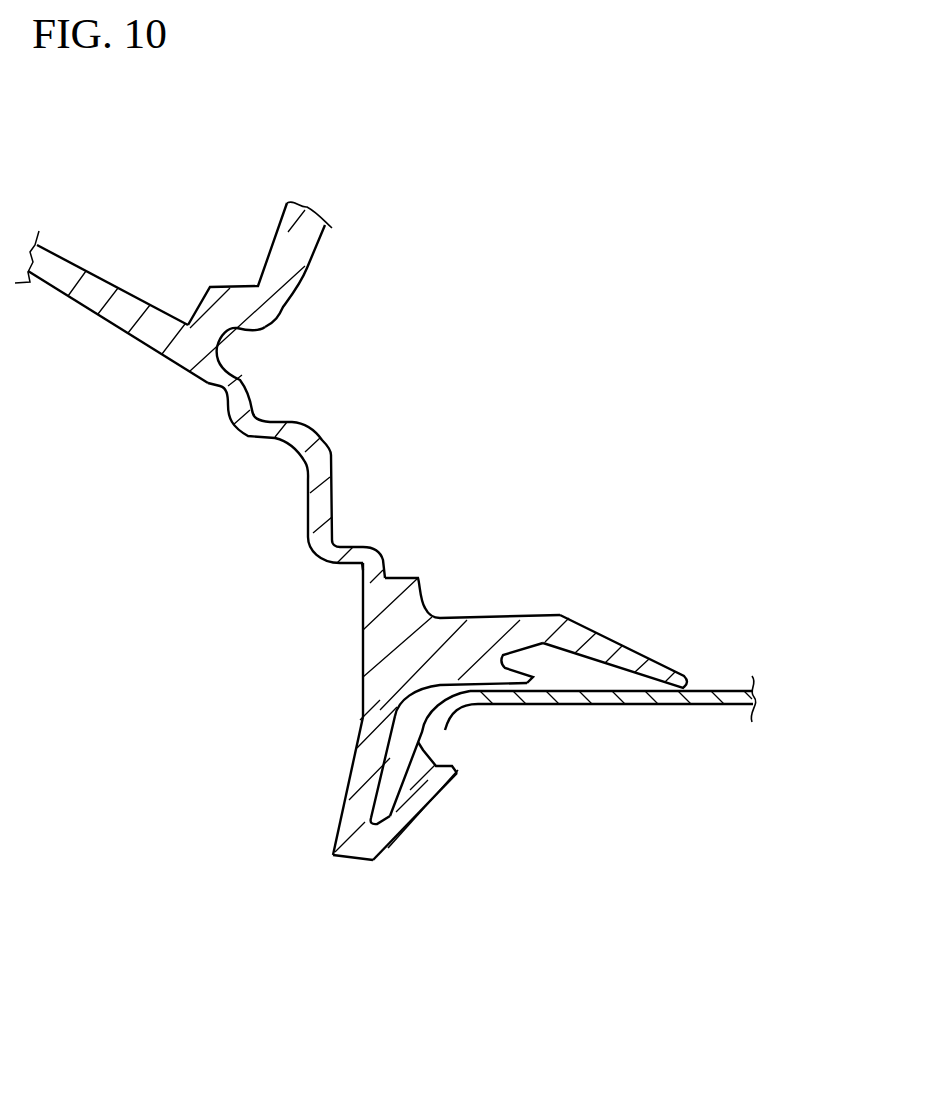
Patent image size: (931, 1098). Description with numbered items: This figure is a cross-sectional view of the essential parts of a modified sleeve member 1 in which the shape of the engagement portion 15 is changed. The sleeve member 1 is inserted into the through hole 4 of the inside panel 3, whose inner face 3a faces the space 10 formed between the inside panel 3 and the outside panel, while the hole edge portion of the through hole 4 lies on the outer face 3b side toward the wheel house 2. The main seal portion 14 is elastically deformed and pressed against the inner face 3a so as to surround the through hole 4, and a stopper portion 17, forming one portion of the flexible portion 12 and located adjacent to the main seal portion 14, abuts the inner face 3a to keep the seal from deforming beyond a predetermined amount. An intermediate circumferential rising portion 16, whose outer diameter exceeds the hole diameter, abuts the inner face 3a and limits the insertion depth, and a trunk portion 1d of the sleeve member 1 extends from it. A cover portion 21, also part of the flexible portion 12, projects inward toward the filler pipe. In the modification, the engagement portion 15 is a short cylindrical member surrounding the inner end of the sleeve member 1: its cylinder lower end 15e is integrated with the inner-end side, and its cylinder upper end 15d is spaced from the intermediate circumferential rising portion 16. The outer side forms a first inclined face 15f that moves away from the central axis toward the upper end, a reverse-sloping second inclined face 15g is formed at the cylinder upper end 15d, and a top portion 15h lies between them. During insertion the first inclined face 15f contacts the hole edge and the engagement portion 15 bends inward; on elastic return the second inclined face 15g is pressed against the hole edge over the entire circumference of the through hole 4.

The sleeve member 1 is at (290, 257).
The trunk portion 1d is at (328, 444).
The wheel house 2 is at (625, 935).
The inside panel 3 is at (636, 687).
The inner face 3a is at (703, 688).
The outer face 3b is at (727, 705).
The through hole 4 is at (425, 705).
The space 10 is at (538, 436).
The flexible portion 12 is at (333, 488).
The main seal portion 14 is at (613, 643).
The engagement portion 15 is at (420, 807).
The cylinder upper end 15d is at (422, 730).
The cylinder lower end 15e is at (390, 848).
The first inclined face 15f is at (435, 805).
The second inclined face 15g is at (418, 757).
The top portion 15h is at (453, 771).
The intermediate circumferential rising portion 16 is at (430, 655).
The stopper portion 17 is at (527, 682).
The cover portion 21 is at (67, 275).